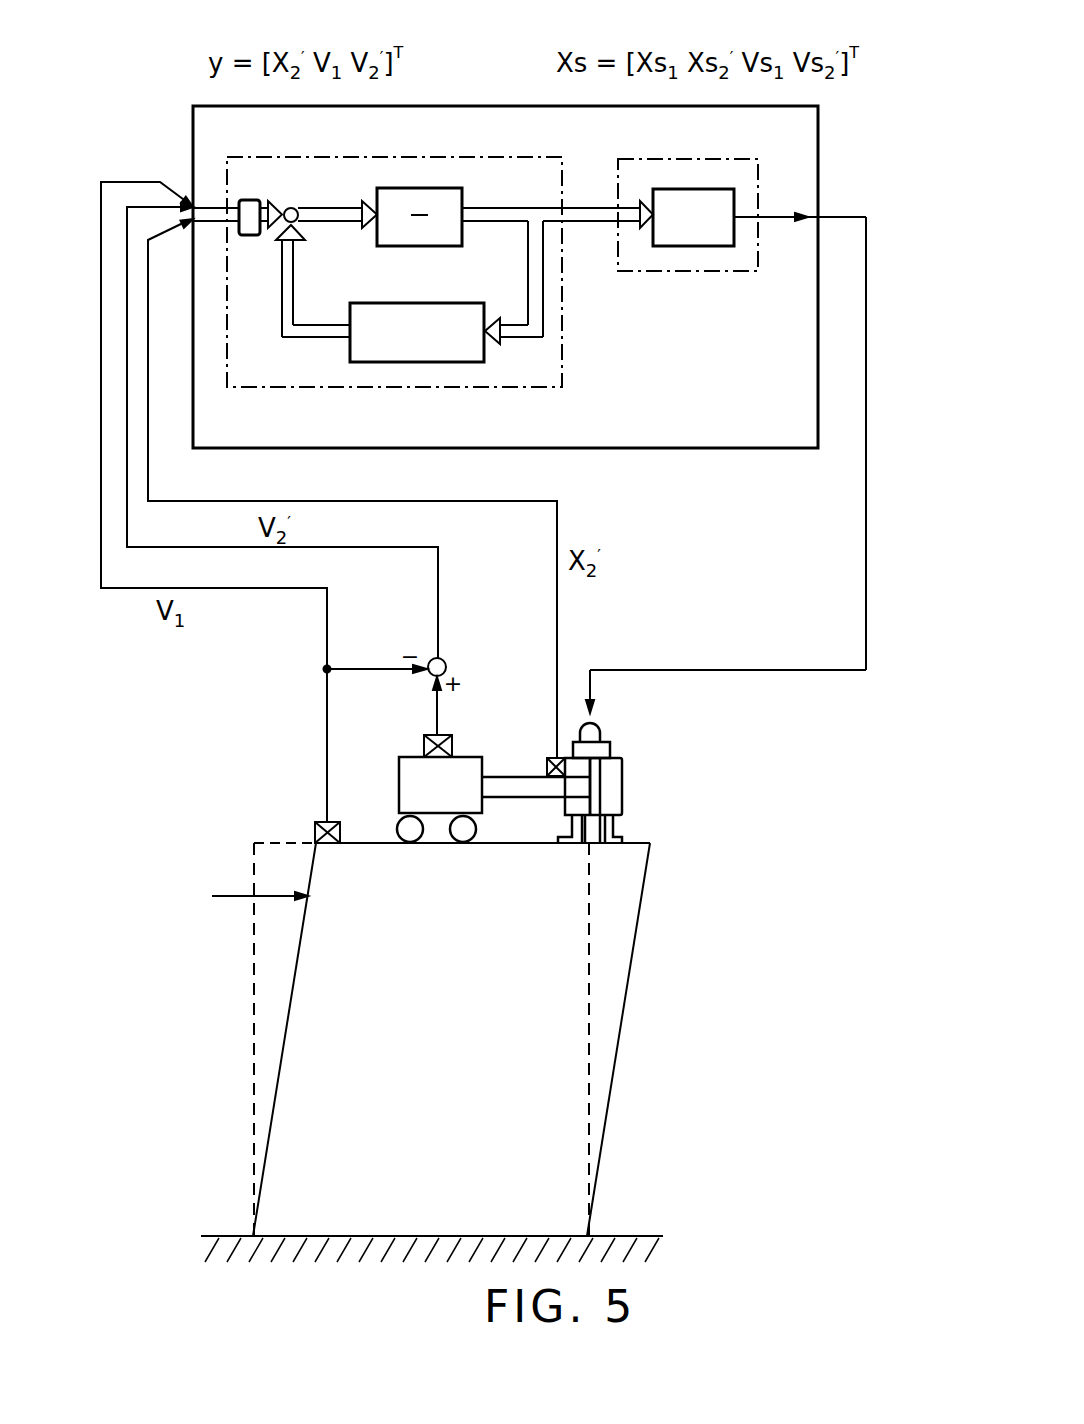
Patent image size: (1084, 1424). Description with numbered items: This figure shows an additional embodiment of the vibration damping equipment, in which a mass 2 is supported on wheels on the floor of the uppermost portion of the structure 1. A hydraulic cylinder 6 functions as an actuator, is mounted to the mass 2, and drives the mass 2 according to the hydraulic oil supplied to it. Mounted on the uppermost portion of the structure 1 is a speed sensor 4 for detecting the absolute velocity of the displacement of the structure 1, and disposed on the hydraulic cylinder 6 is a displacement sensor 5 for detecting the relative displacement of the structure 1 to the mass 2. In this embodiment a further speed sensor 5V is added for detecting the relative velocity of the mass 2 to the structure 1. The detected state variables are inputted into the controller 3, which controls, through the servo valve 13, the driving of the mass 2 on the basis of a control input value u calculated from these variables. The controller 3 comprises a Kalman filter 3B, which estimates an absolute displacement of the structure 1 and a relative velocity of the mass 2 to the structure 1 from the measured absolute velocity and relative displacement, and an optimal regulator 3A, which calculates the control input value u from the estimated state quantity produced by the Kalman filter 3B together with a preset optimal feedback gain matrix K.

The structure 1 is at (622, 1037).
The mass 2 is at (468, 757).
The controller 3 is at (500, 100).
The optimal regulator 3A is at (740, 157).
The Kalman filter 3B is at (448, 157).
The speed sensor 4 is at (316, 826).
The displacement sensor 5 is at (548, 763).
The speed sensor 5V is at (422, 746).
The hydraulic cylinder 6 is at (622, 791).
The servo valve 13 is at (603, 731).